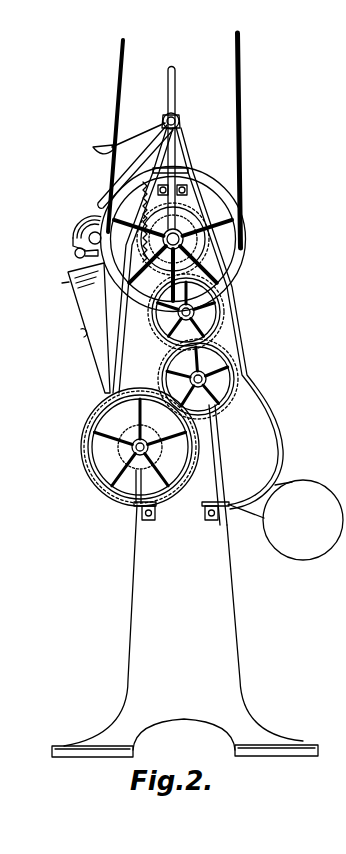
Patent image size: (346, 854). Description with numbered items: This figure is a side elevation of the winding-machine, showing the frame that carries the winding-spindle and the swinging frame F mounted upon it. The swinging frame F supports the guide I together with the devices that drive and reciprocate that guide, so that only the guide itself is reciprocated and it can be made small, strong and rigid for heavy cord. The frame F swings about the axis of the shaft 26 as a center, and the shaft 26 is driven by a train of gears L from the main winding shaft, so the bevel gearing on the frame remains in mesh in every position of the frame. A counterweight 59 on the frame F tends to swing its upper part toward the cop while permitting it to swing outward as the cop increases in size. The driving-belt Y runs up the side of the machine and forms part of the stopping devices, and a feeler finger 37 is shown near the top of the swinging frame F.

The feeler finger 37 is at (93, 147).
The driving-belt Y is at (242, 112).
The guide I is at (75, 232).
The swinging frame F is at (86, 328).
The train of gears L is at (221, 327).
The shaft 26 is at (132, 449).
The counterweight 59 is at (286, 520).